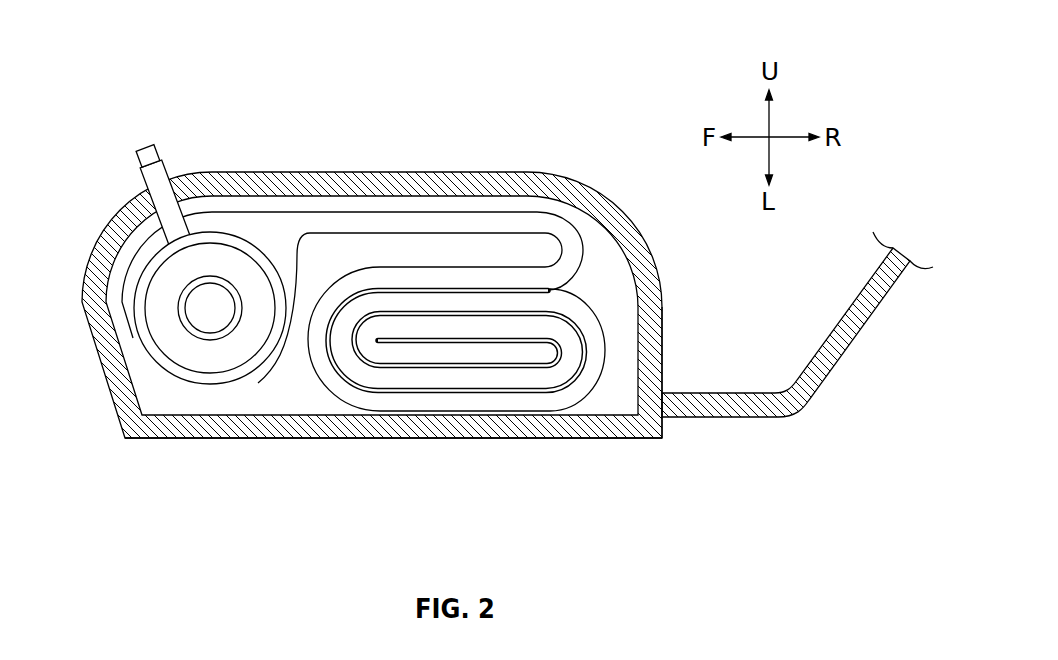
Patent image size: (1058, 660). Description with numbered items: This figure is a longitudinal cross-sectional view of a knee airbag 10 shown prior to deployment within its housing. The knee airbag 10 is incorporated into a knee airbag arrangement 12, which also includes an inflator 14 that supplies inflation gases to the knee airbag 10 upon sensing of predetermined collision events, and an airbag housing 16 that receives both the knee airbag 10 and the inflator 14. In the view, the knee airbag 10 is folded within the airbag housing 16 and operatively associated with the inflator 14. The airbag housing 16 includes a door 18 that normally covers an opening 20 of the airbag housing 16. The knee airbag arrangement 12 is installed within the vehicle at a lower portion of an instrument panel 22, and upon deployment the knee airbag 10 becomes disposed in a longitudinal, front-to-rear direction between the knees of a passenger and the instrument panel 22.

The knee airbag 10 is at (593, 307).
The knee airbag arrangement 12 is at (526, 92).
The inflator 14 is at (157, 312).
The airbag housing 16 is at (92, 231).
The door 18 is at (337, 438).
The opening 20 is at (640, 390).
The instrument panel 22 is at (865, 315).